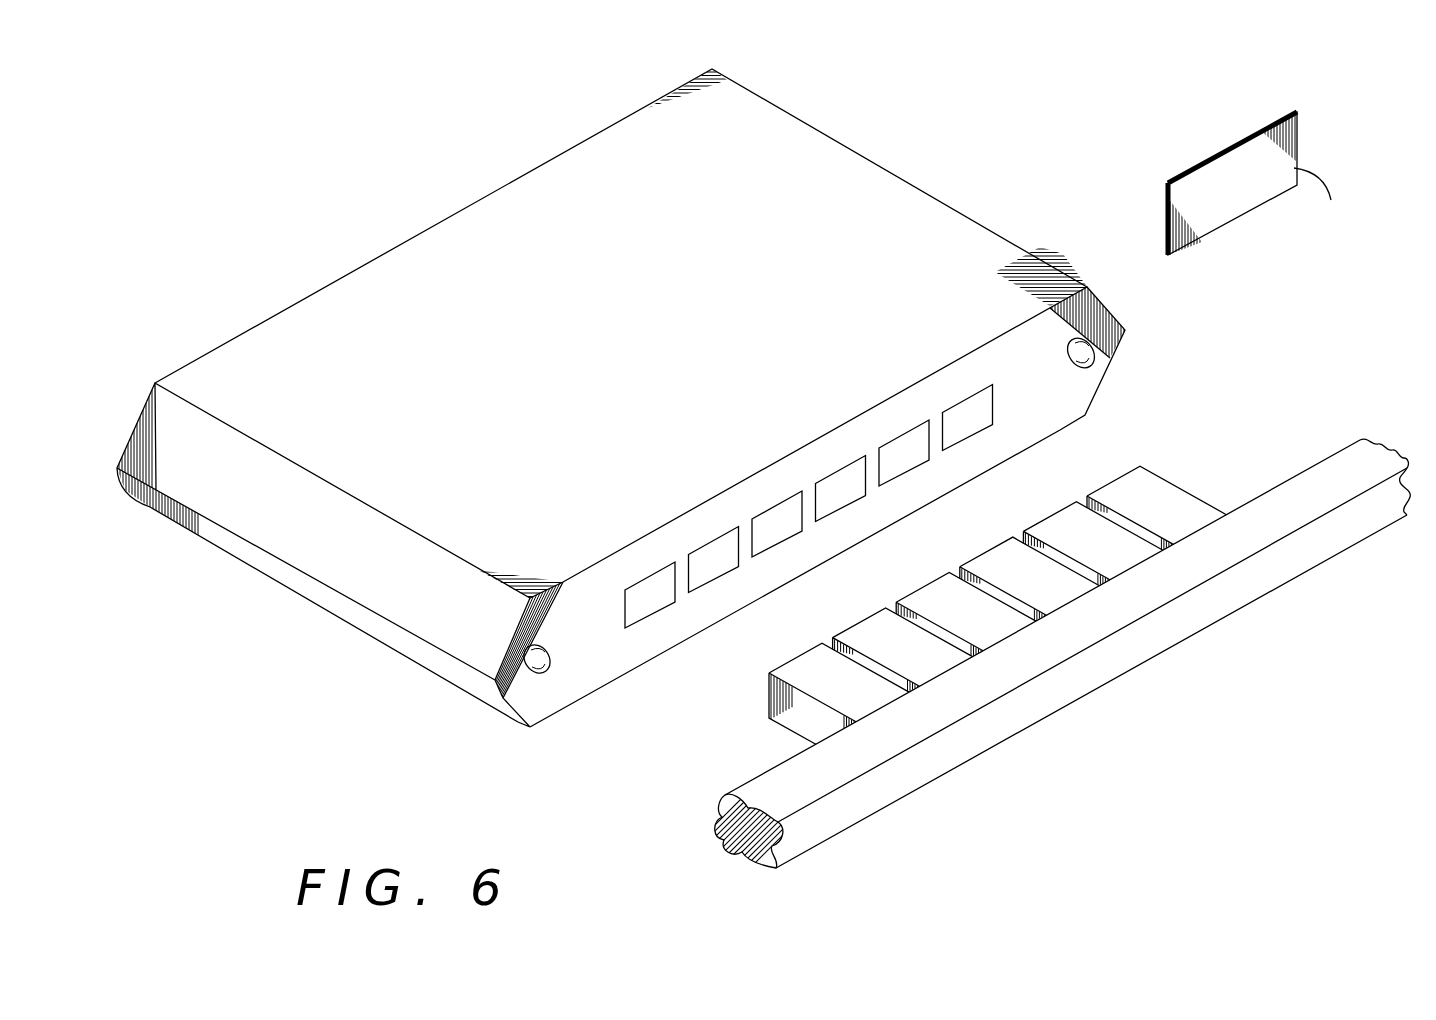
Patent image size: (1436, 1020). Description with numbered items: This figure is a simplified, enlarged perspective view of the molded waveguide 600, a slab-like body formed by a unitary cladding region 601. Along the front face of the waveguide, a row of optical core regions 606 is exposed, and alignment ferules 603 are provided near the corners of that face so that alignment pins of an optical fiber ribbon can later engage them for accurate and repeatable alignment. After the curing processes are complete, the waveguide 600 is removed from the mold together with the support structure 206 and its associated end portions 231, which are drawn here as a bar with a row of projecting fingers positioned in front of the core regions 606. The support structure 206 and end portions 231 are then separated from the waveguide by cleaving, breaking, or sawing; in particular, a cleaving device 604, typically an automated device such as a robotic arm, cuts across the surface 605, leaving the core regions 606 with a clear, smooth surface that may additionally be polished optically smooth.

The molded waveguide 600 is at (654, 387).
The unitary cladding region 601 is at (928, 193).
The alignment ferules 603 is at (551, 668).
The cleaving device 604 is at (1215, 168).
The surface 605 is at (1095, 313).
The optical core regions 606 is at (660, 608).
The end portions 231 is at (1203, 465).
The support structure 206 is at (1086, 683).